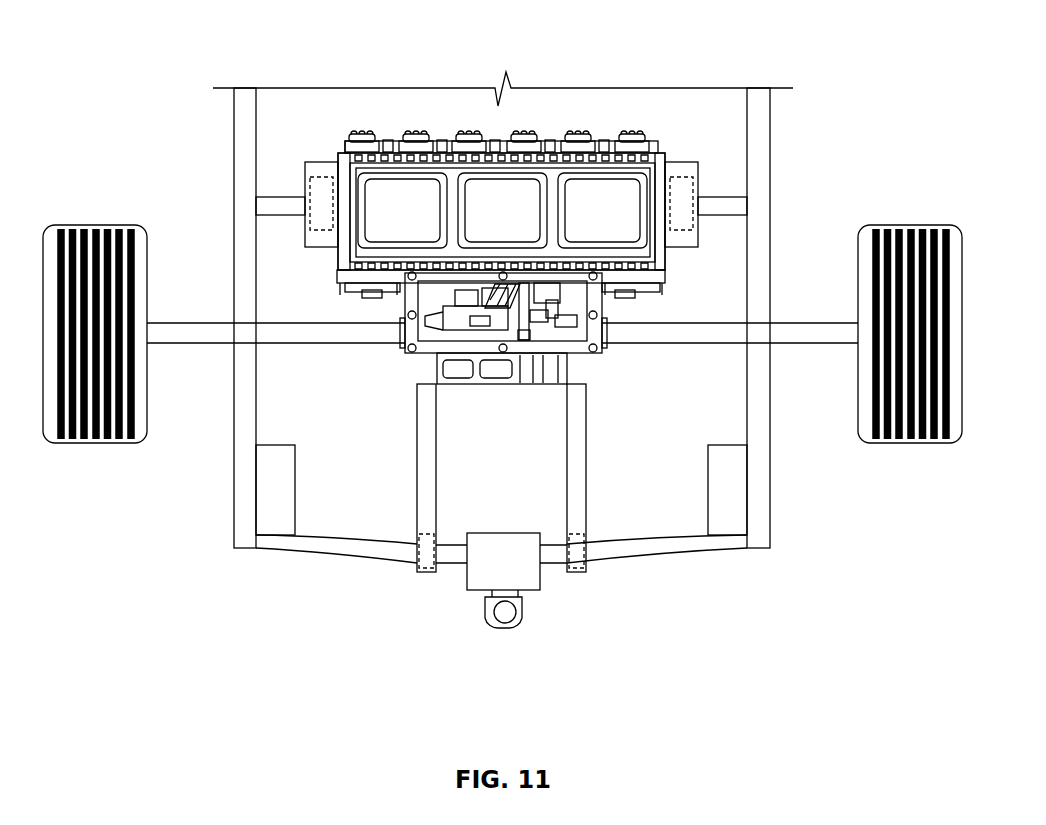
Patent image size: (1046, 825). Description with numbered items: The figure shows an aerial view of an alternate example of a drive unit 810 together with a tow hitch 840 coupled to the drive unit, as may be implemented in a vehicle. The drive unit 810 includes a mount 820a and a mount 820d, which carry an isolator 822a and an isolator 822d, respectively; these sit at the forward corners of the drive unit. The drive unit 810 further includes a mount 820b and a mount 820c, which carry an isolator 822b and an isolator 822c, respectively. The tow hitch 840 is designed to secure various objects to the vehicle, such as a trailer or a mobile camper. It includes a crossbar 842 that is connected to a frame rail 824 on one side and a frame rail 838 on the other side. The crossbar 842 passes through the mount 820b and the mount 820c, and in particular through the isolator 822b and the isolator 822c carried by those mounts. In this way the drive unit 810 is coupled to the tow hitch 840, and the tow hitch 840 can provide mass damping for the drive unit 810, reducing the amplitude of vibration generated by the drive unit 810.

The drive unit 810 is at (555, 137).
The mount 820a is at (343, 163).
The mount 820b is at (417, 493).
The mount 820c is at (585, 493).
The mount 820d is at (673, 163).
The isolator 822a is at (303, 165).
The isolator 822b is at (419, 570).
The isolator 822c is at (585, 570).
The isolator 822d is at (700, 165).
The frame rail 824 is at (234, 522).
The frame rail 838 is at (770, 522).
The tow hitch 840 is at (541, 660).
The crossbar 842 is at (705, 564).